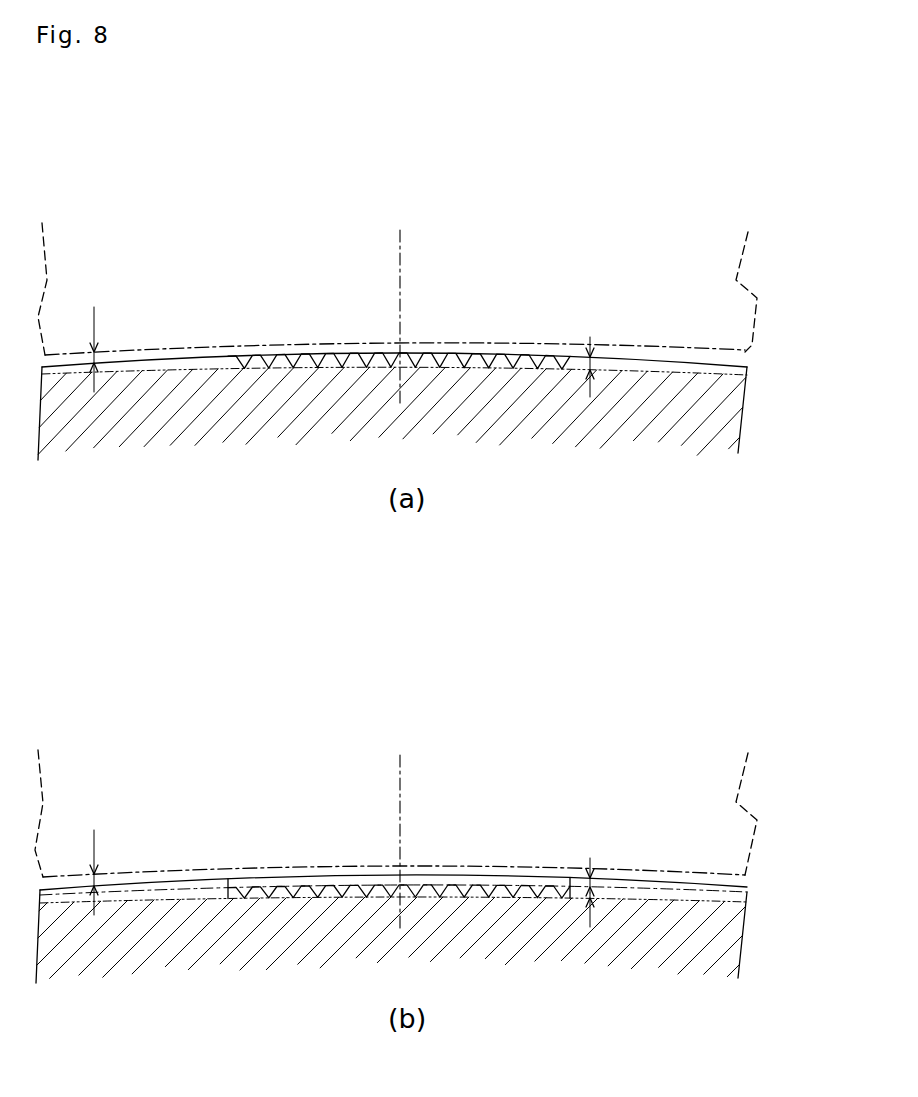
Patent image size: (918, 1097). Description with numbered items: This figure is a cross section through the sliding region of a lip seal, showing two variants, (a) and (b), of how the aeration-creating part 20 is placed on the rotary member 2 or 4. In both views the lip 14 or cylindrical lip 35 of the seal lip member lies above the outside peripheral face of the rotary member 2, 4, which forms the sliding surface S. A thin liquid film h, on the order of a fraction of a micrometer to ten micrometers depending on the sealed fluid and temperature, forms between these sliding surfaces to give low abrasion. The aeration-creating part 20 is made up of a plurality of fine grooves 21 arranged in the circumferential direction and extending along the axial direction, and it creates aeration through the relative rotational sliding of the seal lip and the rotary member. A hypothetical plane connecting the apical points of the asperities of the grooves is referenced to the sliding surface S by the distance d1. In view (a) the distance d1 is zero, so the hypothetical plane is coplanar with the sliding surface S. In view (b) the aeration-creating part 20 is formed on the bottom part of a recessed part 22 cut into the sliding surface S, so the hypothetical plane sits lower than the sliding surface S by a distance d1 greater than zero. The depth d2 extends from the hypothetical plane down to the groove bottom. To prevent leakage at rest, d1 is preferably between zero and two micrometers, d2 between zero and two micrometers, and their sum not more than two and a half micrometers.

The rotary member 2 is at (439, 700).
The rotary member 4 is at (743, 420).
The lip 14 is at (451, 536).
The cylindrical lip 35 is at (758, 298).
The aeration-creating part 20 is at (533, 262).
The fine grooves 21 is at (348, 357).
The recessed part 22 is at (243, 888).
The sliding surface S is at (717, 363).
The liquid film h is at (84, 605).
The distance between the sliding surface and the hypothetical plane d1 is at (610, 860).
The depth from the hypothetical plane to the bottom part d2 is at (607, 632).